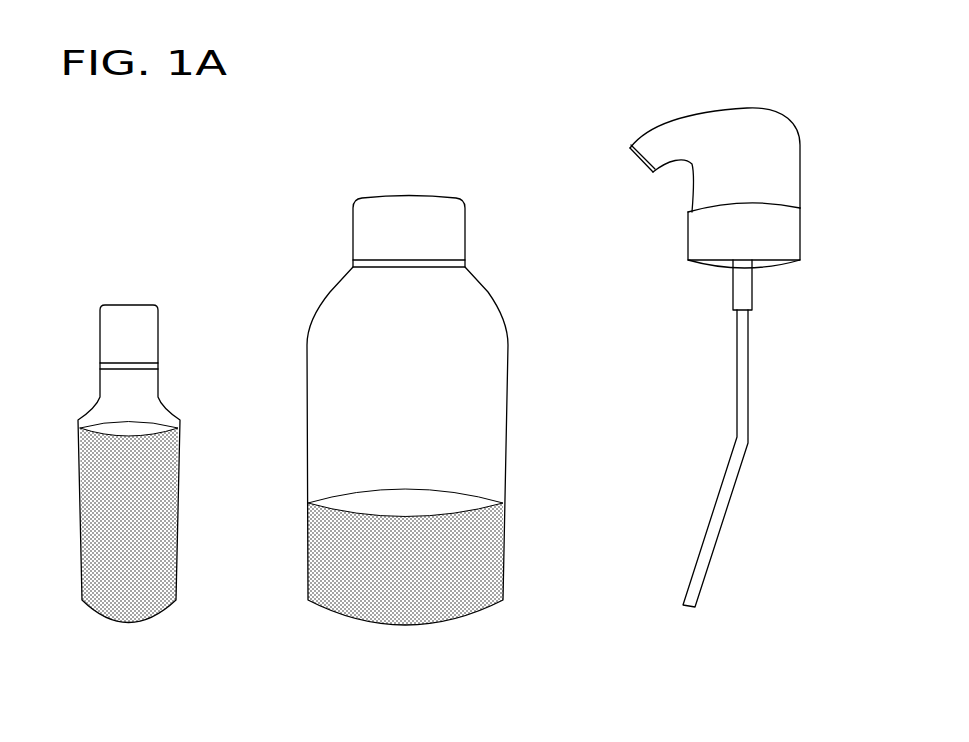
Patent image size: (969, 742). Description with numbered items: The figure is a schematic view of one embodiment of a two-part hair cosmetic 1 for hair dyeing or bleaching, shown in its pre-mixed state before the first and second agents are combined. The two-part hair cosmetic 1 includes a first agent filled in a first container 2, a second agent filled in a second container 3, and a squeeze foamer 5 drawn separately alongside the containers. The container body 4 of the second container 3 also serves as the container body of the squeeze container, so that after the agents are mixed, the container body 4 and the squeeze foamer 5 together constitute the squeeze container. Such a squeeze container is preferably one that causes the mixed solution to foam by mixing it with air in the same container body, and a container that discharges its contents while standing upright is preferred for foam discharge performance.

The two-part hair cosmetic 1 is at (535, 675).
The first container 2 is at (165, 405).
The second container 3 is at (429, 411).
The container body 4 is at (487, 418).
The squeeze foamer 5 is at (800, 145).